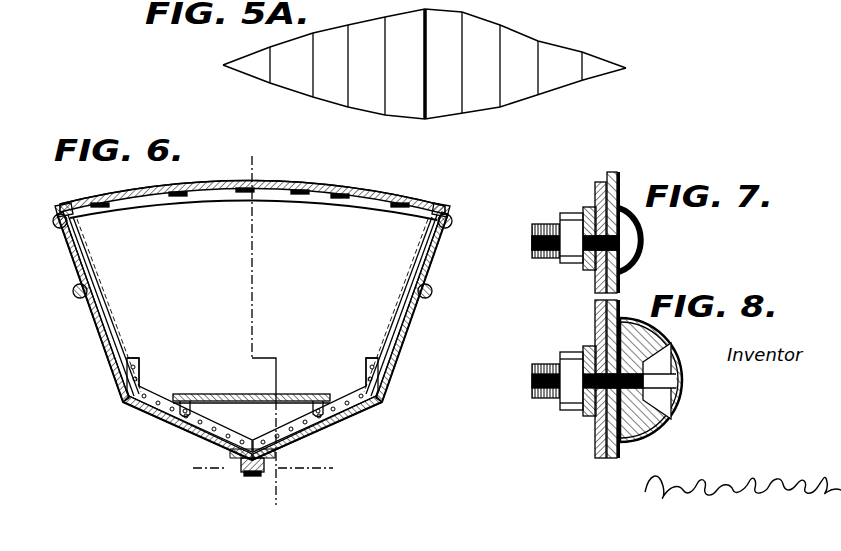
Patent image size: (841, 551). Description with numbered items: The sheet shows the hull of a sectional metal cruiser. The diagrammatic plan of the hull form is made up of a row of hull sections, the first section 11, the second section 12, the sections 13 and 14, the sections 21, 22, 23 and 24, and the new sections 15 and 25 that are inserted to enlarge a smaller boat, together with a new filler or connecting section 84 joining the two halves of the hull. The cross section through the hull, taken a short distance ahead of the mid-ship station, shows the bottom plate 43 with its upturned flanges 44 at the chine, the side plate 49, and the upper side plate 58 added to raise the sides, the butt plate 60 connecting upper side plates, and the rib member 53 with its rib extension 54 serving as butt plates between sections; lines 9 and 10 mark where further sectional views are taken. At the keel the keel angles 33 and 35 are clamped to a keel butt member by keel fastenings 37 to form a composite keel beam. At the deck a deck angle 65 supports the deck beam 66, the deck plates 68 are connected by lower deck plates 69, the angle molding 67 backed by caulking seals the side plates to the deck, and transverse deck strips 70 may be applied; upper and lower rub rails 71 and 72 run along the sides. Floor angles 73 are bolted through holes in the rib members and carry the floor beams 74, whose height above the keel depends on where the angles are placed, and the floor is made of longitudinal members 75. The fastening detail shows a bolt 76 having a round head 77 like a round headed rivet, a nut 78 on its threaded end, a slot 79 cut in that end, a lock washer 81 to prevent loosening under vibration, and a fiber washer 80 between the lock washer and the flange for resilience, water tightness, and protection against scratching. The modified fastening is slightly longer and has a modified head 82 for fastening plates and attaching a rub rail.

In FIG. 5A, the first section 11 is at (598, 68).
In FIG. 5A, the second section 12 is at (566, 78).
In FIG. 5A, the section 13 is at (521, 92).
In FIG. 5A, the section 14 is at (478, 100).
In FIG. 5A, the new section 15 is at (438, 100).
In FIG. 5A, the hull section 21 is at (257, 66).
In FIG. 5A, the hull section 22 is at (300, 84).
In FIG. 5A, the hull section 23 is at (341, 96).
In FIG. 5A, the hull section 24 is at (378, 106).
In FIG. 5A, the new section 25 is at (407, 104).
In FIG. 5A, the filler section 84 is at (427, 118).
In FIG. 6, the section line 9 is at (252, 163).
In FIG. 6, the section line 10 is at (202, 472).
In FIG. 6, the keel angles 33 is at (233, 457).
In FIG. 6, the keel angles 35 is at (250, 478).
In FIG. 6, the keel fastenings 37 is at (242, 474).
In FIG. 6, the plate 43 is at (177, 425).
In FIG. 6, the upturned flanges 44 is at (125, 404).
In FIG. 7, the upturned flanges 44 is at (597, 280).
In FIG. 6, the plate 49 is at (108, 353).
In FIG. 7, the plate 49 is at (620, 280).
In FIG. 8, the plate 49 is at (598, 435).
In FIG. 6, the rib member 53 is at (142, 370).
In FIG. 6, the rib extension 54 is at (108, 314).
In FIG. 6, the upper side plate 58 is at (77, 257).
In FIG. 8, the upper side plate 58 is at (615, 463).
In FIG. 6, the butt plate 60 is at (82, 262).
In FIG. 6, the deck angle 65 is at (80, 228).
In FIG. 6, the deck beam 66 is at (178, 199).
In FIG. 6, the angle molding 67 is at (63, 209).
In FIG. 6, the deck plates 68 is at (88, 198).
In FIG. 6, the lower deck plates 69 is at (126, 198).
In FIG. 6, the transverse deck strips 70 is at (115, 174).
In FIG. 6, the upper rub rail 71 is at (53, 223).
In FIG. 6, the lower rub rail 72 is at (73, 290).
In FIG. 8, the lower rub rail 72 is at (663, 422).
In FIG. 6, the floor angles 73 is at (194, 397).
In FIG. 6, the floor beams 74 is at (213, 395).
In FIG. 6, the longitudinal members 75 is at (274, 359).
In FIG. 7, the bolt 76 is at (552, 224).
In FIG. 8, the bolt 76 is at (547, 388).
In FIG. 7, the round head 77 is at (637, 242).
In FIG. 7, the nut 78 is at (568, 244).
In FIG. 8, the nut 78 is at (570, 382).
In FIG. 7, the slot 79 is at (532, 238).
In FIG. 8, the slot 79 is at (533, 373).
In FIG. 7, the fiber washer 80 is at (598, 203).
In FIG. 8, the fiber washer 80 is at (596, 352).
In FIG. 7, the lock washer 81 is at (590, 207).
In FIG. 8, the lock washer 81 is at (590, 353).
In FIG. 8, the modified head 82 is at (670, 361).